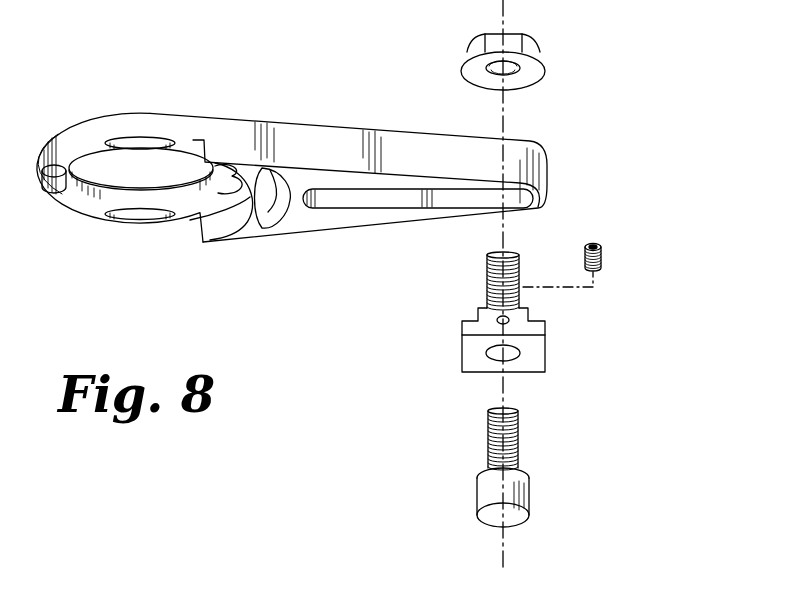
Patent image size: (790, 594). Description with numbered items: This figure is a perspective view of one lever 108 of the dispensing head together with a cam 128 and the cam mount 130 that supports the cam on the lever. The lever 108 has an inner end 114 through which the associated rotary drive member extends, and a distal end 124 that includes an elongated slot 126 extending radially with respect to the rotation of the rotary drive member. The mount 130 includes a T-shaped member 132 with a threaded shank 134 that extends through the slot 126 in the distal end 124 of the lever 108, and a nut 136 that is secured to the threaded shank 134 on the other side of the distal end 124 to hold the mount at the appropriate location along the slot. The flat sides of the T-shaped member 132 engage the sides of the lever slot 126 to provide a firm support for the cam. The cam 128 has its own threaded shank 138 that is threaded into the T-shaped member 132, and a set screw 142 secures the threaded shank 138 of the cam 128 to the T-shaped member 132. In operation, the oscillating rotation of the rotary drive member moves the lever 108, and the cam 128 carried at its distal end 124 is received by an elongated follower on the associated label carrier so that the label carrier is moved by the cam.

The lever 108 is at (409, 143).
The inner end 114 is at (104, 123).
The distal end 124 is at (547, 170).
The elongated slot 126 is at (363, 198).
The cam 128 is at (546, 483).
The mount 130 is at (543, 307).
The T-shaped member 132 is at (462, 335).
The shank 134 is at (487, 270).
The nut 136 is at (540, 55).
The threaded shank 138 is at (488, 423).
The set screw 142 is at (603, 256).